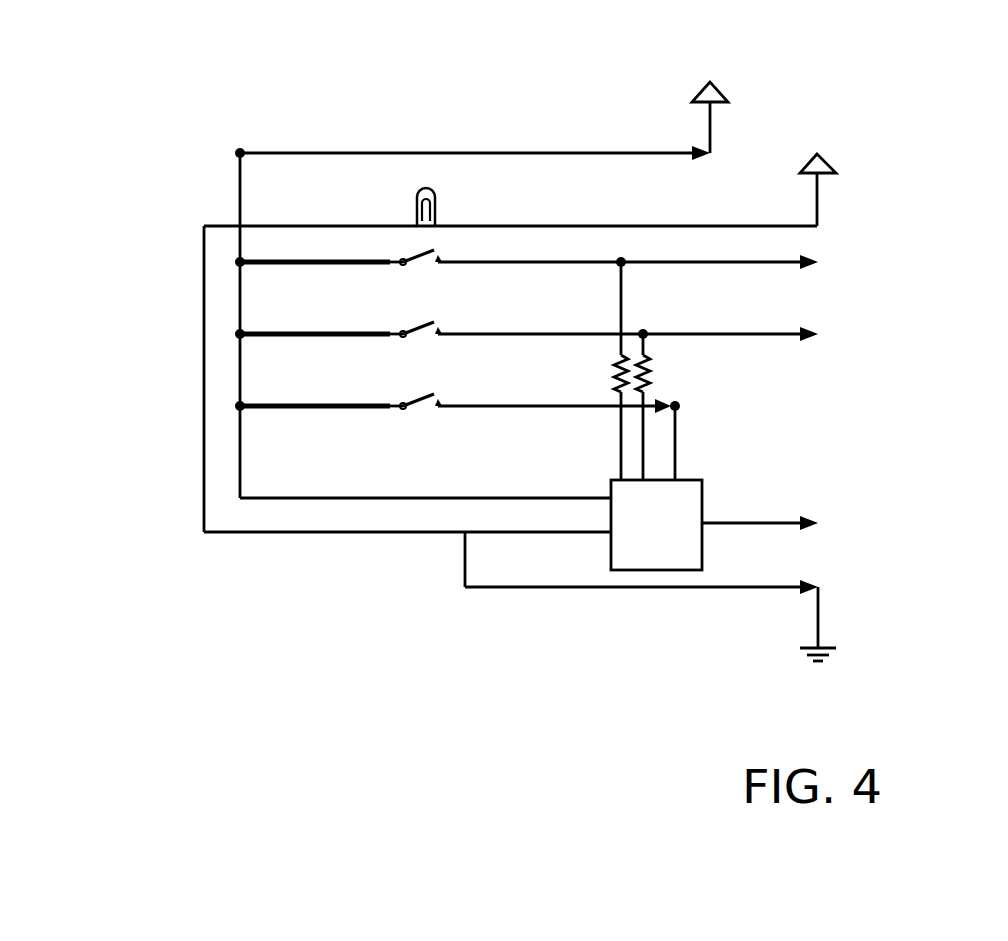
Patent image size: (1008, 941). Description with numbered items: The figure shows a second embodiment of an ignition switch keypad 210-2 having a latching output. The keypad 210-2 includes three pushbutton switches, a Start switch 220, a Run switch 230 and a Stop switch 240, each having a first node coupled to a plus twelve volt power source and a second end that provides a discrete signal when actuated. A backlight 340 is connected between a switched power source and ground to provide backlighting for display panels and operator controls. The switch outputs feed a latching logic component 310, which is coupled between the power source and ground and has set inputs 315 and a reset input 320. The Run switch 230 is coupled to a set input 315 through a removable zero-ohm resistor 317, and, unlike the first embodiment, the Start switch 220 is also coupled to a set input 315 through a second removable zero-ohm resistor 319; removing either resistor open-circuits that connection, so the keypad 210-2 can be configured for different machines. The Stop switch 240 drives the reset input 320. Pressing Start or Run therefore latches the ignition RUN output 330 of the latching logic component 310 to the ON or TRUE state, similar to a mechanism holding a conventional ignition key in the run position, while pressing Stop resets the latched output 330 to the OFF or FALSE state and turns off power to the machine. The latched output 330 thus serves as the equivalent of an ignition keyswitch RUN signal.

The ignition switch keypad 210-2 is at (134, 141).
The backlight 340 is at (412, 201).
The Start switch 220 is at (336, 312).
The Run switch 230 is at (336, 393).
The Stop switch 240 is at (336, 457).
The 0 ohm resistor 319 is at (573, 383).
The 0 ohm resistor 317 is at (693, 362).
The set input 315 is at (612, 478).
The reset input 320 is at (676, 476).
The latching logic component 310 is at (650, 571).
The output 330 is at (766, 519).